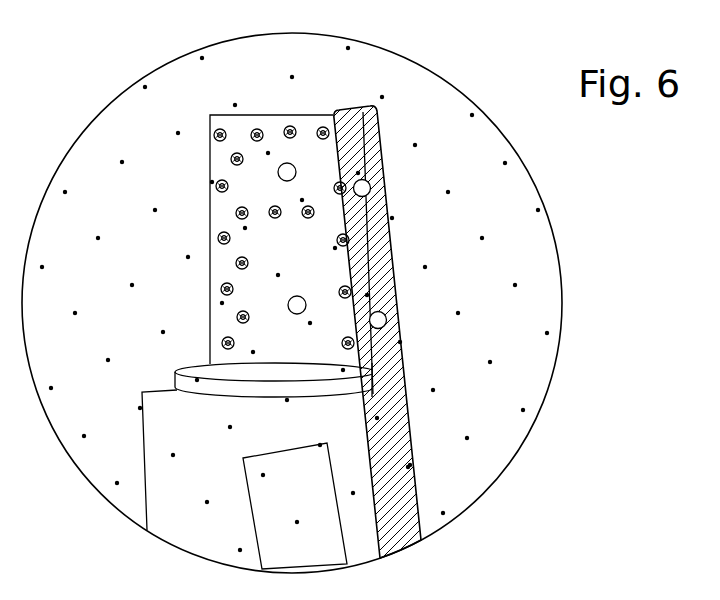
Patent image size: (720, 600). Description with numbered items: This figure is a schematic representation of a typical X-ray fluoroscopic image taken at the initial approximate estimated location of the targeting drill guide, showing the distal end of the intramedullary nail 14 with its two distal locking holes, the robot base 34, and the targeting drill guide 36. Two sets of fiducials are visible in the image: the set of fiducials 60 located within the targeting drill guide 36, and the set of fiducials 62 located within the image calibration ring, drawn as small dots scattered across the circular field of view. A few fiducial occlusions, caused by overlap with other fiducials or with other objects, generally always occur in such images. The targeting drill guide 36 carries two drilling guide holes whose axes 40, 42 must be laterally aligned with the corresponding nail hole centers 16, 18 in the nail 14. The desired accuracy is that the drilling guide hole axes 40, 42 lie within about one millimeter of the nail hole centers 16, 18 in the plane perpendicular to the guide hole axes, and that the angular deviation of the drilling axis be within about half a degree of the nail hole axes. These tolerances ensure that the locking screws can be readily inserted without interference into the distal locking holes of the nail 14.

The nail 14 is at (376, 117).
The nail hole center 16 is at (388, 190).
The nail hole center 18 is at (410, 324).
The robot base 34 is at (252, 528).
The targeting drill guide 36 is at (210, 115).
The drilling guide hole axis 40 is at (283, 179).
The drilling guide hole axis 42 is at (296, 314).
The set of fiducials 60 is at (221, 291).
The set of fiducials 62 is at (117, 484).